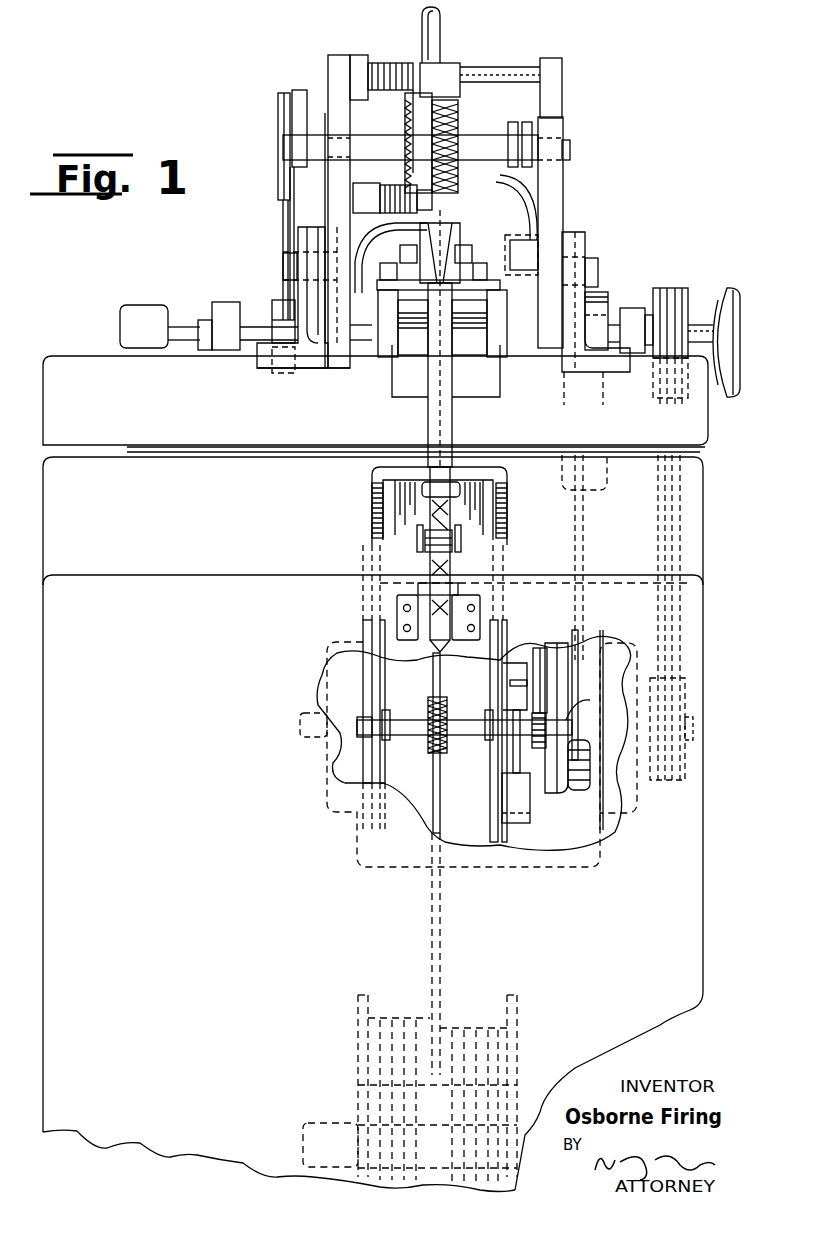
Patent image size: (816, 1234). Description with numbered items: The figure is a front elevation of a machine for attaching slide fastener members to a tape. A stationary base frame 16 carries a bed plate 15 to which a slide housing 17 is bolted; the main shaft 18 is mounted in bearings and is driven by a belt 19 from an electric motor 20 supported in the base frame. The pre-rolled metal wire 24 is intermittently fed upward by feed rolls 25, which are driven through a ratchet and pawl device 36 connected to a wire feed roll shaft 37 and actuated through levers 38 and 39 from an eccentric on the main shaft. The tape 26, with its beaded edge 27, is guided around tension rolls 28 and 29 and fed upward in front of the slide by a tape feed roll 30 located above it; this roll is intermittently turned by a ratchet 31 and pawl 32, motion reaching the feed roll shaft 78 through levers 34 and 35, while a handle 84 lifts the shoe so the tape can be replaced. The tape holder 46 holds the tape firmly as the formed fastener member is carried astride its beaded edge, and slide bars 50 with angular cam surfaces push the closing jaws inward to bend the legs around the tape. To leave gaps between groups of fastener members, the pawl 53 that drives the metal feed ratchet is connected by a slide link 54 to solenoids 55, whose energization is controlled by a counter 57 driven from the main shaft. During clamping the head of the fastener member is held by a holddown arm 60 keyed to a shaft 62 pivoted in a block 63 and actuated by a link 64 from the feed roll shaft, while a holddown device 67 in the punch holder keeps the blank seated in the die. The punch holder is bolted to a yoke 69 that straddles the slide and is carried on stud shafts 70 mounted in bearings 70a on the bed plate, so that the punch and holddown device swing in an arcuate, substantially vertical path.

The bed plate 15 is at (708, 425).
The base frame 16 is at (704, 791).
The slide housing 17 is at (455, 378).
The main shaft 18 is at (206, 322).
The belt 19 is at (660, 502).
The electric motor 20 is at (327, 785).
The metal wire 24 is at (438, 825).
The feed rolls 25 is at (446, 750).
The tape 26 is at (427, 507).
The beaded edge 27 is at (450, 510).
The tension roll 28 is at (420, 590).
The tension roll 29 is at (417, 556).
The tape feed roll 30 is at (457, 118).
The ratchet 31 is at (418, 128).
The pawl 32 is at (422, 92).
The lever 34 is at (278, 118).
The lever 35 is at (299, 88).
The ratchet and pawl device 36 is at (545, 750).
The wire feed roll shaft 37 is at (372, 718).
The lever 38 is at (595, 812).
The lever 39 is at (592, 700).
The tape holder 46 is at (402, 398).
The slide bars 50 is at (385, 330).
The pawl 53 is at (528, 660).
The slide link 54 is at (517, 680).
The solenoids 55 is at (520, 812).
The counter 57 is at (118, 323).
The holddown arm 60 is at (478, 368).
The shaft 62 is at (560, 222).
The block 63 is at (500, 262).
The link 64 is at (524, 238).
The holddown device 67 is at (412, 340).
The yoke 69 is at (520, 204).
The stud shafts 70 is at (285, 266).
The bearings 70a is at (300, 228).
The feed roll shaft 78 is at (569, 146).
The handle 84 is at (442, 20).